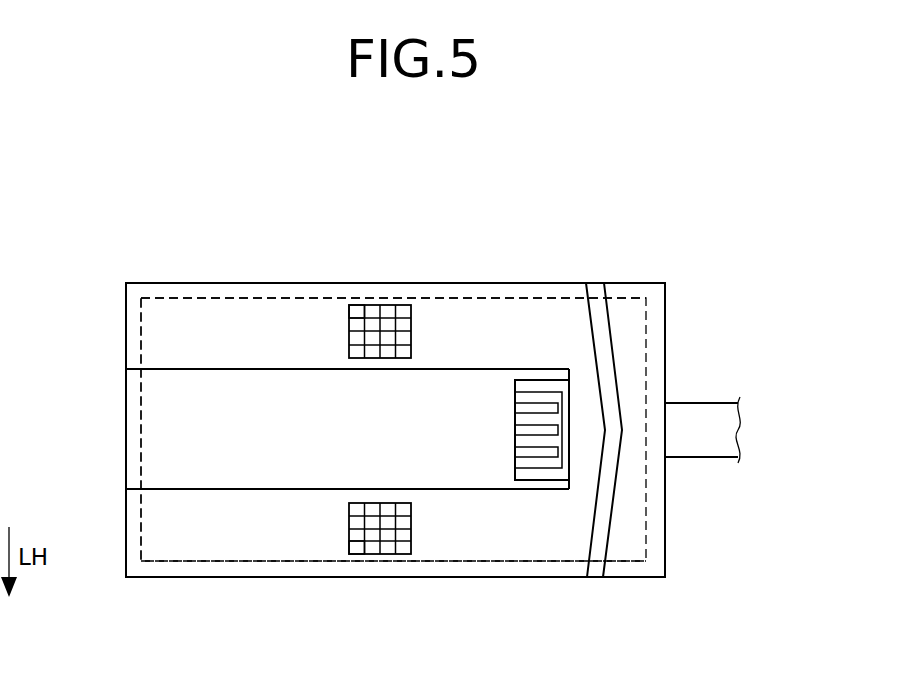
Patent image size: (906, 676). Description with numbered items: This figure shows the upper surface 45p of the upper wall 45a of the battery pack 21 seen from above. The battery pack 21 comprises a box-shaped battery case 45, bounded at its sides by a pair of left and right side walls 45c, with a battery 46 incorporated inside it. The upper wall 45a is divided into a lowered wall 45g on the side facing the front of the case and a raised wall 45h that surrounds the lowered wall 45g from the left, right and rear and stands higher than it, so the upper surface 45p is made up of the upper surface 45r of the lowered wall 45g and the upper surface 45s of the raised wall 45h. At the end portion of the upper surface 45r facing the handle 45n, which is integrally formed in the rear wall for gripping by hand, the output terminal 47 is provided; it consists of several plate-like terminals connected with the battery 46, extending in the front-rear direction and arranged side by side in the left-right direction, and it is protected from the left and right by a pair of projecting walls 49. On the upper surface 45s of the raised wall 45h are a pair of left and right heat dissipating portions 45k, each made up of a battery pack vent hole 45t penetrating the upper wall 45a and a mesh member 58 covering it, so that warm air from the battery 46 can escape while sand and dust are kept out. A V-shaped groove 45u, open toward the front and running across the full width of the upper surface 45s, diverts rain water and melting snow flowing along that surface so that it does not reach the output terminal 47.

The battery pack 21 is at (227, 281).
The battery case 45 is at (124, 321).
The raised wall 45h is at (166, 331).
The upper surface of the raised wall 45s is at (190, 315).
The upper wall 45a is at (284, 332).
The upper surface of the upper wall 45p is at (173, 387).
The battery 46 is at (140, 482).
The lowered wall 45g is at (224, 460).
The upper surface of the lowered wall 45r is at (263, 477).
The battery pack vent hole 45t is at (358, 312).
The heat dissipating portion 45k is at (383, 303).
The mesh member 58 is at (398, 321).
The side wall 45c is at (475, 283).
The projecting wall 49 is at (535, 384).
The output terminal 47 is at (512, 433).
The groove 45u is at (612, 352).
The handle 45n is at (718, 430).